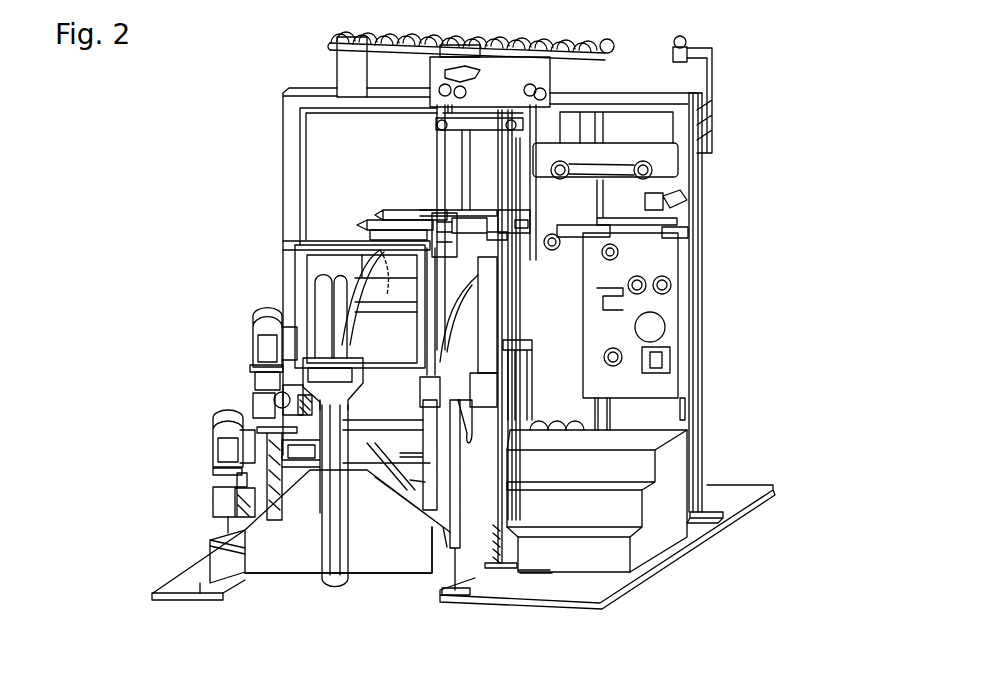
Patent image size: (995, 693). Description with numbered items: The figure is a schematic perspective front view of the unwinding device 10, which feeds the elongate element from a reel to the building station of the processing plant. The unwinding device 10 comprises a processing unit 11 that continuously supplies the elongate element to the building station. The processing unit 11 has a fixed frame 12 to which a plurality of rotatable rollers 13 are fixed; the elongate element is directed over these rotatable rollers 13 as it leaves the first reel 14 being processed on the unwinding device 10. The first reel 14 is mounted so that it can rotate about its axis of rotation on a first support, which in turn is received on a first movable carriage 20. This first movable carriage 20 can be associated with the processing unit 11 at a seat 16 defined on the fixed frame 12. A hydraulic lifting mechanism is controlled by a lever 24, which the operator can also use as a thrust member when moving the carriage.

The unwinding device 10 is at (197, 218).
The processing unit 11 is at (703, 256).
The fixed frame 12 is at (623, 93).
The rotatable rollers 13 is at (655, 173).
The first reel 14 is at (372, 336).
The seat 16 is at (228, 574).
The first movable carriage 20 is at (295, 541).
The lever 24 is at (336, 565).